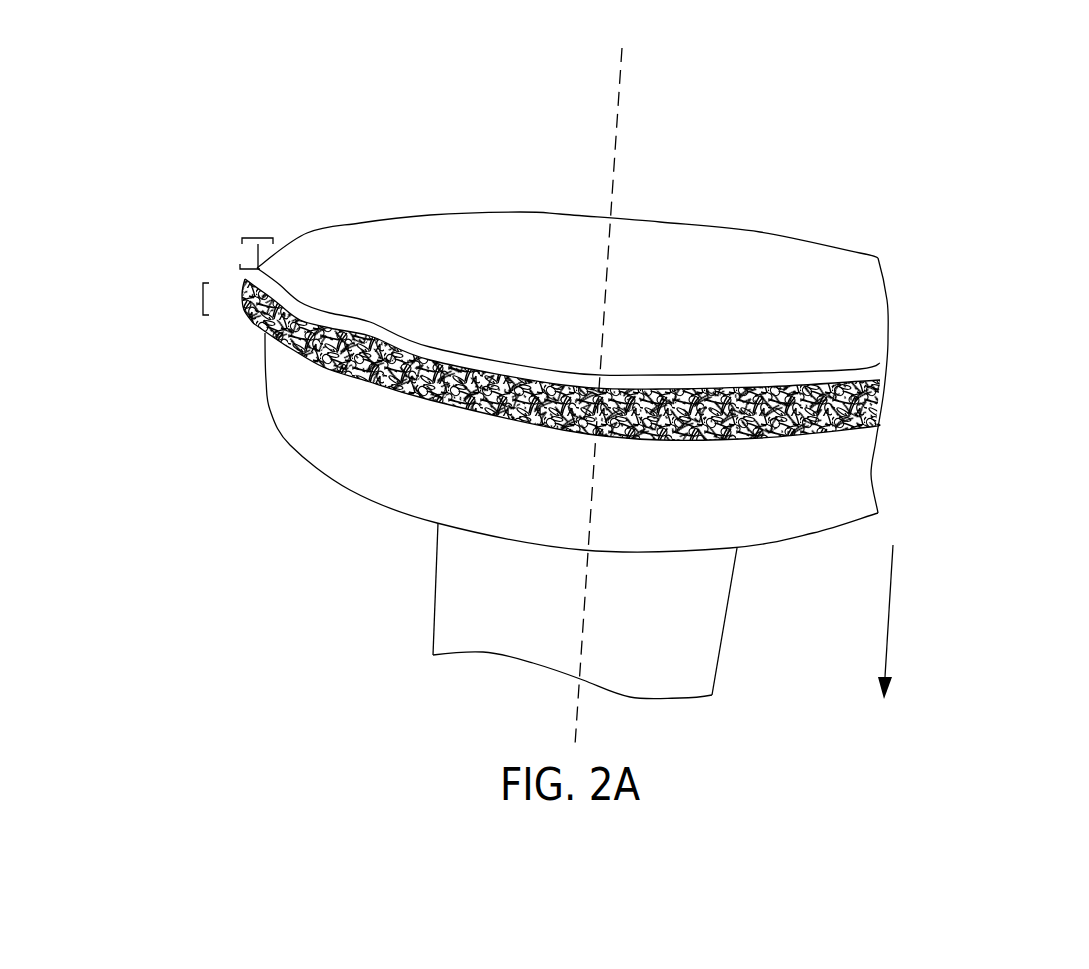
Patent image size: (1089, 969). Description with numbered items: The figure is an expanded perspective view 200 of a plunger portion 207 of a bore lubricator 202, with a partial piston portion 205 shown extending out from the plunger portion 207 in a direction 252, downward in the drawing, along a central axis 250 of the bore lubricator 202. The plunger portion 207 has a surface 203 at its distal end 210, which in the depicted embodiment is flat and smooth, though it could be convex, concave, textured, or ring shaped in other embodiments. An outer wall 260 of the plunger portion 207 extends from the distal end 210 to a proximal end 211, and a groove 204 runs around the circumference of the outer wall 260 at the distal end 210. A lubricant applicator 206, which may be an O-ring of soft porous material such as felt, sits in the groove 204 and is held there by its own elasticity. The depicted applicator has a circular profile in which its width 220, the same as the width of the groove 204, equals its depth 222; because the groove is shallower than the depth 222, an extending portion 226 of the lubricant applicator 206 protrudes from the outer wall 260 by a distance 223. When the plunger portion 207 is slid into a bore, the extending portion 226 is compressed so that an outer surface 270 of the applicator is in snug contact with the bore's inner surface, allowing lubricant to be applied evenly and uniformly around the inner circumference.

The expanded perspective view 200 is at (898, 94).
The bore lubricator 202 is at (472, 182).
The surface 203 is at (666, 245).
The groove 204 is at (517, 371).
The piston portion 205 is at (723, 633).
The lubricant applicator 206 is at (290, 347).
The plunger portion 207 is at (970, 352).
The distal end 210 is at (667, 158).
The proximal end 211 is at (393, 532).
The width 220 is at (201, 301).
The depth 222 is at (258, 238).
The distance 223 is at (257, 266).
The extending portion 226 is at (247, 330).
The central axis 250 is at (622, 67).
The direction 252 is at (889, 612).
The outer wall 260 is at (265, 338).
The outer surface 270 is at (243, 297).